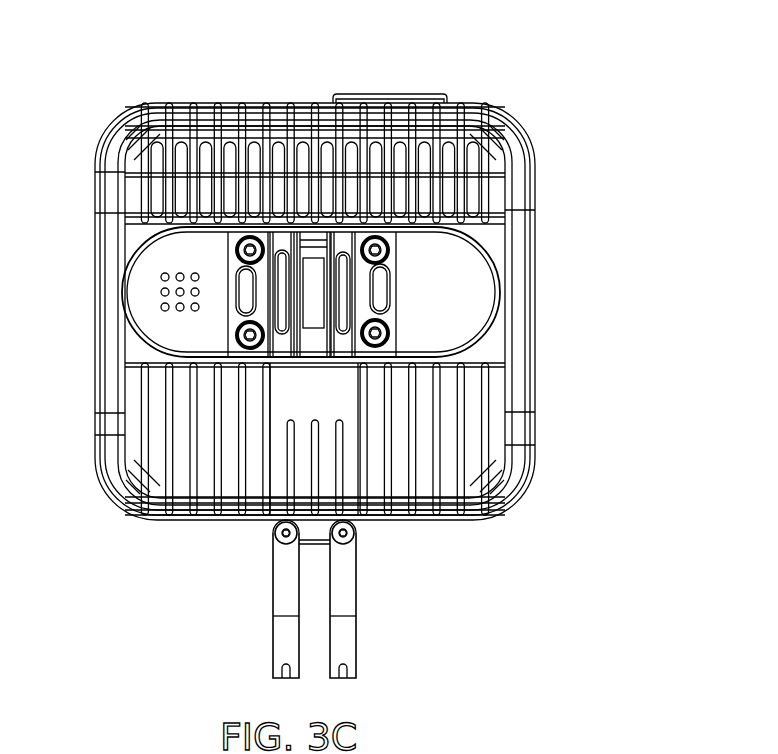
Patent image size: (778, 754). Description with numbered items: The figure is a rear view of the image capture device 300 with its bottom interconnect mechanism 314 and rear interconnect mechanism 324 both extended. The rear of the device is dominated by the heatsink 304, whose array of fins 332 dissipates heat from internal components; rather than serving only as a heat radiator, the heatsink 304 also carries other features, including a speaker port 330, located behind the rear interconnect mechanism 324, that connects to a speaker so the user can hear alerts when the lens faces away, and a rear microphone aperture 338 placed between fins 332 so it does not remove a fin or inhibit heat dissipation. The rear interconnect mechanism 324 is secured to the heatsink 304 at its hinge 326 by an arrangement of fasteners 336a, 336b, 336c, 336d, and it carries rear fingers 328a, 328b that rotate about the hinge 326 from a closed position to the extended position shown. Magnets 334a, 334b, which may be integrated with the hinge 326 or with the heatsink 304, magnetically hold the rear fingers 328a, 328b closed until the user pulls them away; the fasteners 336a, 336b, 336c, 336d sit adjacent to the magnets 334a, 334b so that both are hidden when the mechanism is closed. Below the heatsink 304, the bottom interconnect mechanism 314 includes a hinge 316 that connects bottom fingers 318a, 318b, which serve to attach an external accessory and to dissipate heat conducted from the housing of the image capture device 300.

The image capture device 300 is at (592, 40).
The heatsink 304 is at (518, 117).
The bottom interconnect mechanism 314 is at (327, 599).
The hinge 316 is at (318, 547).
The bottom finger 318a is at (357, 580).
The bottom finger 318b is at (273, 578).
The rear interconnect mechanism 324 is at (307, 235).
The hinge 326 is at (318, 253).
The rear finger 328a is at (213, 227).
The rear finger 328b is at (357, 293).
The speaker port 330 is at (175, 292).
The fins 332 is at (190, 125).
The magnet 334a is at (238, 312).
The magnet 334b is at (388, 270).
The fastener 336a is at (237, 250).
The fastener 336b is at (240, 340).
The fastener 336c is at (385, 258).
The fastener 336d is at (388, 332).
The rear microphone aperture 338 is at (207, 193).